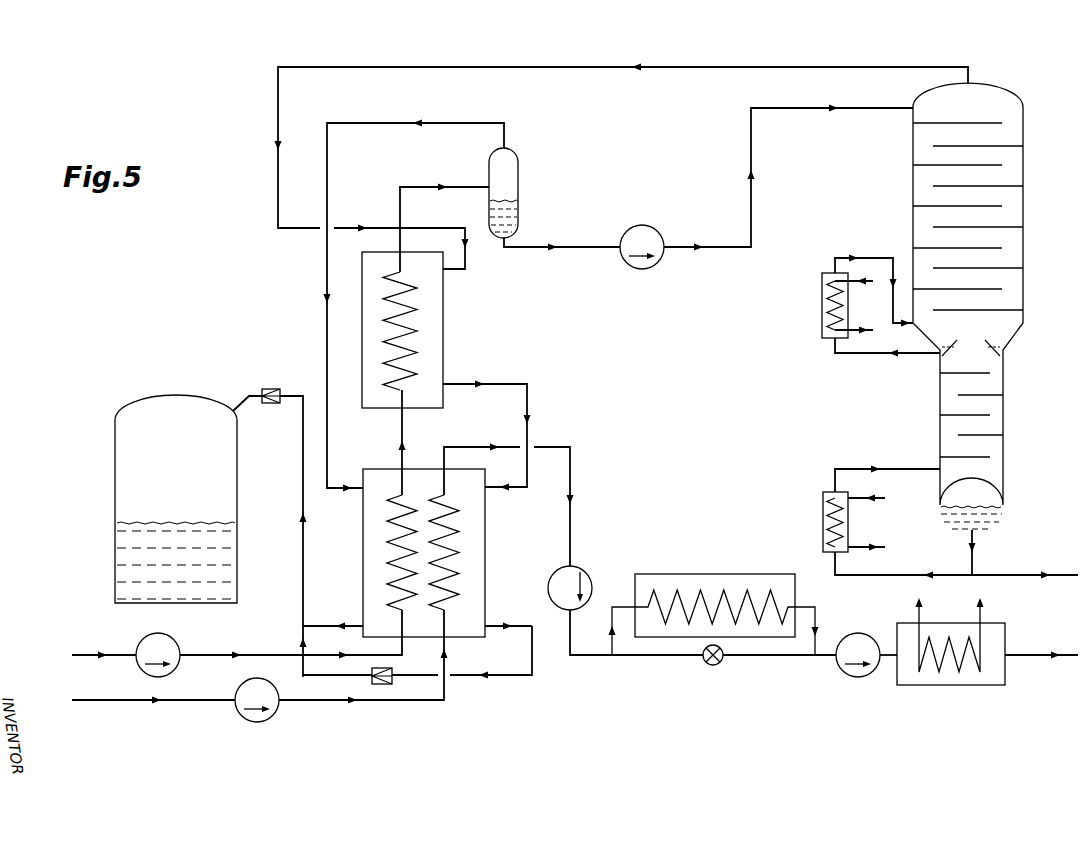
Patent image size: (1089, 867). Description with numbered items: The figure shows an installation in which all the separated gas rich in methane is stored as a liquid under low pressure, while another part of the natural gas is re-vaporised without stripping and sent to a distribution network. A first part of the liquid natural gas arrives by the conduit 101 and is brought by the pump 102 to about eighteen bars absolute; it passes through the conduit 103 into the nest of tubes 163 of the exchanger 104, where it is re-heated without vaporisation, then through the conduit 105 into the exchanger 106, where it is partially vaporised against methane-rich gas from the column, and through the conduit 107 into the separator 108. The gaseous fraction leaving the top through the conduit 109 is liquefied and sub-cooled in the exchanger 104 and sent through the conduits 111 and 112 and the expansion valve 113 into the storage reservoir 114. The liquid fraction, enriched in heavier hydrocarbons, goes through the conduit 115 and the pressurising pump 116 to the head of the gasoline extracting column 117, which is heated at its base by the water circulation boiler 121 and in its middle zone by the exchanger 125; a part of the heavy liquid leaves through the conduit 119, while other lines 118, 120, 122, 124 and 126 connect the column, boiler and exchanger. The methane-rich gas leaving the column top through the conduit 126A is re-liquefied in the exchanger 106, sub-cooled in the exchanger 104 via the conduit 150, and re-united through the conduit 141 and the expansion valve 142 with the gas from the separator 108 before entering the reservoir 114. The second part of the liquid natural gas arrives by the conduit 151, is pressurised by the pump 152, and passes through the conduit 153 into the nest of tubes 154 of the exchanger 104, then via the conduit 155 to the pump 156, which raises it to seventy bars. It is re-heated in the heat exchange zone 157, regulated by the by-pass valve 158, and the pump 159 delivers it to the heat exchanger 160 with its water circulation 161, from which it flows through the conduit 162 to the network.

The conduit 101 is at (77, 651).
The pump 102 is at (174, 642).
The conduit 103 is at (265, 652).
The exchanger 104 is at (363, 553).
The conduit 105 is at (400, 428).
The exchanger 106 is at (445, 318).
The conduit 107 is at (412, 185).
The separator 108 is at (518, 190).
The conduit 109 is at (368, 122).
The conduit 111 is at (352, 634).
The conduit 112 is at (302, 493).
The expansion valve 113 is at (268, 389).
The storage reservoir 114 is at (116, 460).
The conduit 115 is at (571, 250).
The pressurising pump 116 is at (641, 270).
The gasoline extracting column 117 is at (918, 152).
The bottoms line 118 is at (973, 562).
The conduit 119 is at (1063, 574).
The line 120 is at (906, 574).
The water circulation boiler 121 is at (823, 516).
The line 122 is at (896, 468).
The reflux line 124 is at (860, 354).
The exchanger 125 is at (822, 300).
The line 126 is at (882, 257).
The conduit 126A is at (678, 68).
The conduit 141 is at (513, 675).
The expansion valve 142 is at (394, 674).
The conduit 150 is at (530, 397).
The conduit 151 is at (194, 697).
The pressurising pump 152 is at (270, 685).
The conduit 153 is at (447, 664).
The nest of tubes 154 is at (460, 572).
The conduit 155 is at (466, 446).
The pump 156 is at (580, 565).
The heat exchange zone 157 is at (715, 573).
The by-pass valve 158 is at (713, 666).
The pump 159 is at (850, 634).
The heat exchanger 160 is at (944, 622).
The water circulation 161 is at (955, 673).
The conduit 162 is at (1033, 654).
The nest of tubes 163 is at (393, 600).